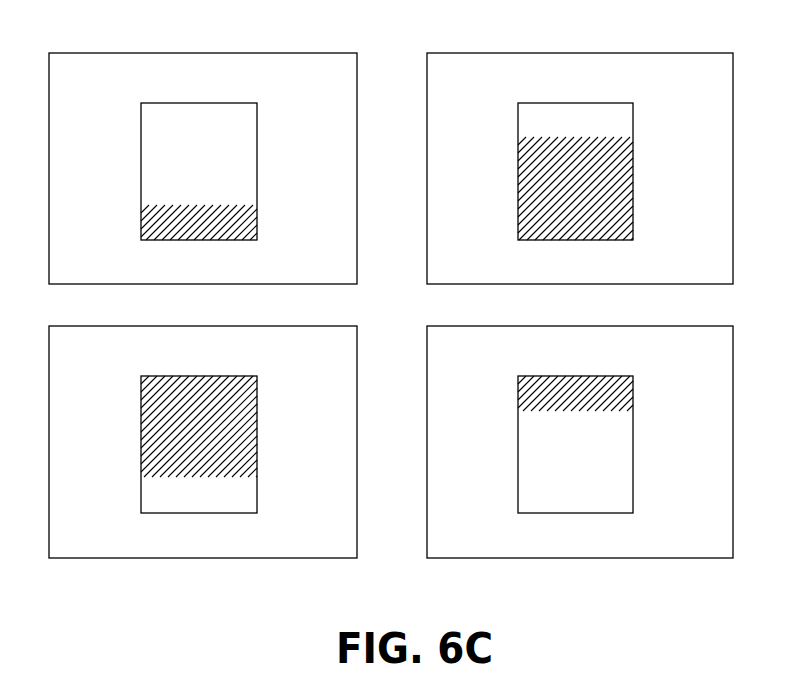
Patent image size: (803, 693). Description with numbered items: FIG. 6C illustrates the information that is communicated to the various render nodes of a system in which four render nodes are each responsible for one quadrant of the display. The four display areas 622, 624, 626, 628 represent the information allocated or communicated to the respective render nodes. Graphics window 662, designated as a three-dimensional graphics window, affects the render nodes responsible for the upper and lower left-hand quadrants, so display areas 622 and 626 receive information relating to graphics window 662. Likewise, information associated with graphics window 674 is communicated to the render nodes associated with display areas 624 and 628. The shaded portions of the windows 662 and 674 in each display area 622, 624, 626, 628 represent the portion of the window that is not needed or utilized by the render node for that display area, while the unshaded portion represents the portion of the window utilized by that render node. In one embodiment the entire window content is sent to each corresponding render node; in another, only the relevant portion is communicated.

The display area 622 is at (224, 53).
The display area 624 is at (508, 53).
The display area 626 is at (224, 559).
The display area 628 is at (506, 559).
The graphics window 662 is at (243, 102).
The graphics window 674 is at (526, 102).